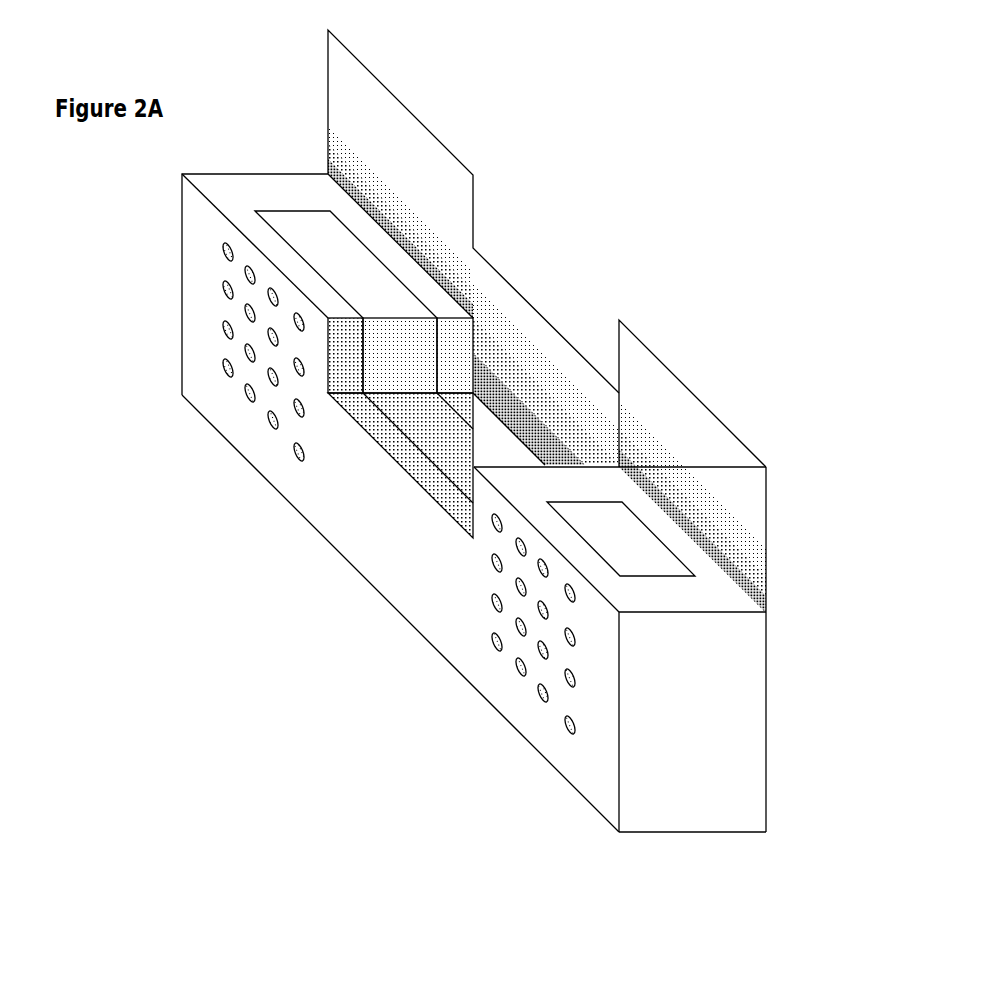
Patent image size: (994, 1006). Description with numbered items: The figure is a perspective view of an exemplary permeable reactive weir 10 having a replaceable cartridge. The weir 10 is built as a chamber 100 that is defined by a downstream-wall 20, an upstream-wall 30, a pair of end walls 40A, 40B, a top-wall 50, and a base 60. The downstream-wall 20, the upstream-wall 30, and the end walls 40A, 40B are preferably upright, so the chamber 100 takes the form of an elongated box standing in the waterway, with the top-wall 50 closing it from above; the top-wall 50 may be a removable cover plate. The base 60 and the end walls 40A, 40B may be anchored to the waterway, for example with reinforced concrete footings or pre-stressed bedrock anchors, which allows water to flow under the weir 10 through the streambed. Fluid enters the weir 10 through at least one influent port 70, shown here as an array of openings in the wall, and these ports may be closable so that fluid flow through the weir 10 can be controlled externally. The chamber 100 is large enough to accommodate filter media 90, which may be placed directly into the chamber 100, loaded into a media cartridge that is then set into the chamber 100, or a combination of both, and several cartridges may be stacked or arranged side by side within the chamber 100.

The permeable reactive weir 10 is at (741, 160).
The downstream-wall 20 is at (393, 515).
The upstream-wall 30 is at (770, 711).
The end wall 40A is at (713, 702).
The end wall 40B is at (178, 282).
The top-wall 50 is at (653, 403).
The base 60 is at (499, 717).
The influent port 70 is at (265, 428).
The filter media 90 is at (636, 538).
The chamber 100 is at (330, 239).